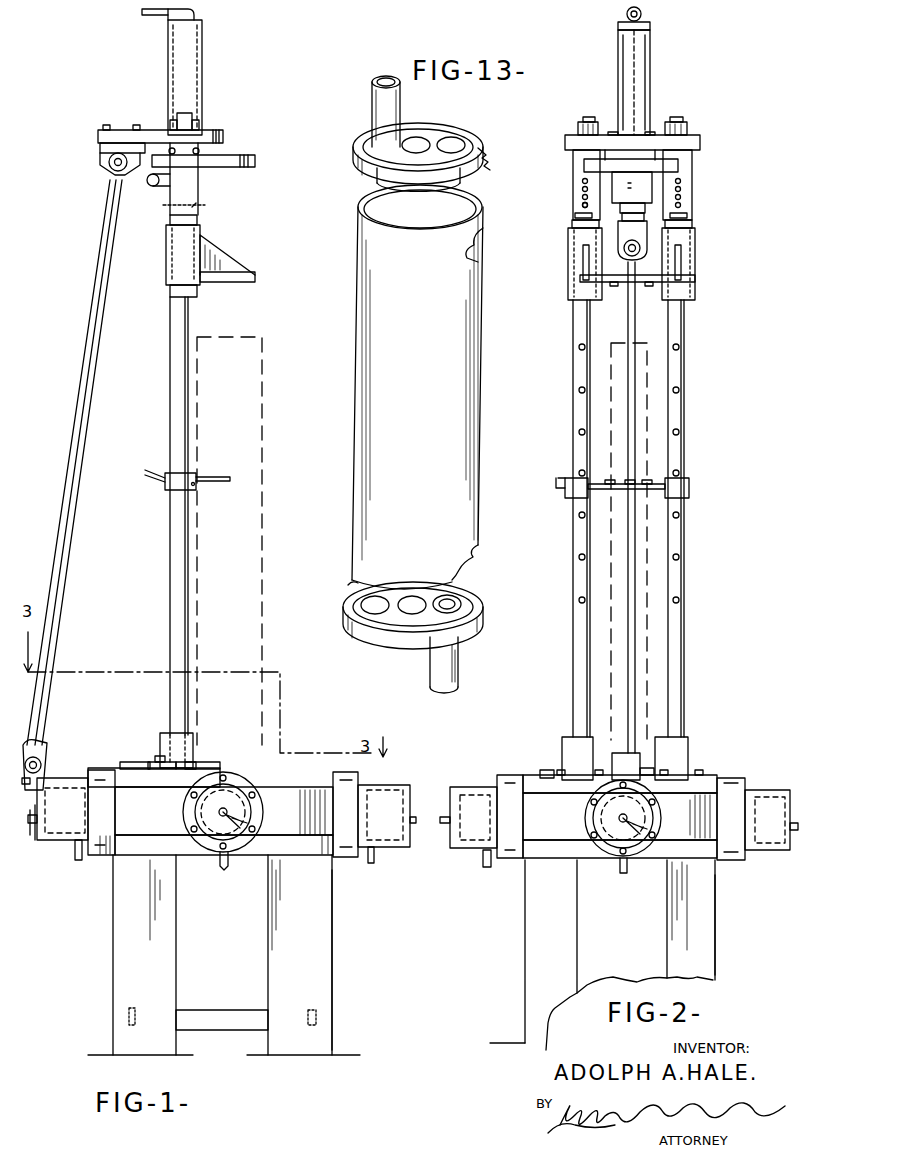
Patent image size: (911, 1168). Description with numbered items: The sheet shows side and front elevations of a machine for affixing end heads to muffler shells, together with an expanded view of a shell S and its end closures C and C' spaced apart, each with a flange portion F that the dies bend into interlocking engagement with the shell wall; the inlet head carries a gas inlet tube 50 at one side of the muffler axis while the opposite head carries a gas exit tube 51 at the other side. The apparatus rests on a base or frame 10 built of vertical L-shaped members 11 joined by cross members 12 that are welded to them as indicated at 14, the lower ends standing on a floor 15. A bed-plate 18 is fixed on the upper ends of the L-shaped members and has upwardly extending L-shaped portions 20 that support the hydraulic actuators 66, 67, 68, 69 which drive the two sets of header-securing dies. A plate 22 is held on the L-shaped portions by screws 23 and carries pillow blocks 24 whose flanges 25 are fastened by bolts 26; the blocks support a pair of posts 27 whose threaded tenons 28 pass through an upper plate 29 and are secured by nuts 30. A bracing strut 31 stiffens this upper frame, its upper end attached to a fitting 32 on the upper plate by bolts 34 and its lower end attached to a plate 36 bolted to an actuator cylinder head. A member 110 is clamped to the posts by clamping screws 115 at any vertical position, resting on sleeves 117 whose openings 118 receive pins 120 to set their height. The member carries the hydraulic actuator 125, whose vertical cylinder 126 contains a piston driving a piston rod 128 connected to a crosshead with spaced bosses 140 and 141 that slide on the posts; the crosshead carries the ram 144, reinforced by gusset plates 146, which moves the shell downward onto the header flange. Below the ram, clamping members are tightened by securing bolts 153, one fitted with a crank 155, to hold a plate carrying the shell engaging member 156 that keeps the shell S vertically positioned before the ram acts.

In FIG. 1, the base or frame 10 is at (340, 928).
In FIG. 2, the base or frame 10 is at (724, 928).
In FIG. 1, the L-shaped members 11 is at (118, 898).
In FIG. 2, the L-shaped members 11 is at (530, 910).
In FIG. 1, the cross members 12 is at (122, 1018).
In FIG. 1, the welds 14 is at (262, 1008).
In FIG. 1, the floor 15 is at (343, 1055).
In FIG. 1, the bed-plate 18 is at (252, 852).
In FIG. 2, the bed-plate 18 is at (651, 858).
In FIG. 1, the L-shaped portions 20 is at (158, 826).
In FIG. 2, the L-shaped portions 20 is at (557, 829).
In FIG. 1, the plate or member 22 is at (136, 778).
In FIG. 2, the plate or member 22 is at (688, 790).
In FIG. 1, the screws 23 is at (160, 762).
In FIG. 2, the screws 23 is at (543, 770).
In FIG. 1, the pillow blocks 24 is at (160, 735).
In FIG. 2, the pillow blocks 24 is at (565, 737).
In FIG. 1, the flanges 25 is at (188, 776).
In FIG. 2, the flanges 25 is at (672, 786).
In FIG. 1, the bolts 26 is at (195, 762).
In FIG. 2, the bolts 26 is at (650, 778).
In FIG. 1, the posts or rods 27 is at (188, 320).
In FIG. 2, the posts or rods 27 is at (578, 410).
In FIG. 1, the threaded tenons 28 is at (185, 120).
In FIG. 2, the threaded tenons 28 is at (583, 122).
In FIG. 1, the plate or member 29 is at (220, 133).
In FIG. 2, the plate or member 29 is at (700, 142).
In FIG. 1, the nuts 30 is at (172, 123).
In FIG. 2, the nuts 30 is at (580, 128).
In FIG. 1, the bracing bar or strut 31 is at (70, 333).
In FIG. 2, the bracing bar or strut 31 is at (632, 320).
In FIG. 1, the fitting 32 is at (106, 160).
In FIG. 1, the bolts 34 is at (130, 128).
In FIG. 1, the plate 36 is at (44, 783).
In FIG. 13, the gas inlet tube 50 is at (458, 657).
In FIG. 13, the gas exit tube 51 is at (395, 107).
In FIG. 1, the hydraulic actuator 66 is at (47, 840).
In FIG. 1, the hydraulic actuator 67 is at (405, 782).
In FIG. 2, the hydraulic actuator 67 is at (608, 850).
In FIG. 1, the hydraulic actuator 68 is at (236, 795).
In FIG. 2, the hydraulic actuator 68 is at (465, 848).
In FIG. 2, the hydraulic actuator 69 is at (748, 803).
In FIG. 1, the member or plate 110 is at (240, 157).
In FIG. 2, the member or plate 110 is at (680, 162).
In FIG. 1, the clamping screws 115 is at (198, 153).
In FIG. 1, the sleeves 117 is at (192, 194).
In FIG. 2, the sleeves 117 is at (573, 190).
In FIG. 2, the openings 118 is at (580, 206).
In FIG. 1, the pins or positioning members 120 is at (198, 208).
In FIG. 2, the pins or positioning members 120 is at (687, 215).
In FIG. 1, the hydraulic actuator 125 is at (203, 58).
In FIG. 2, the hydraulic actuator 125 is at (650, 70).
In FIG. 1, the cylinder 126 is at (178, 35).
In FIG. 2, the cylinder 126 is at (645, 46).
In FIG. 2, the piston rod 128 is at (640, 210).
In FIG. 2, the boss 140 is at (695, 240).
In FIG. 1, the boss 141 is at (166, 258).
In FIG. 2, the boss 141 is at (568, 248).
In FIG. 1, the pressure pad or ram member 144 is at (238, 275).
In FIG. 2, the pressure pad or ram member 144 is at (695, 279).
In FIG. 1, the gusset plates 146 is at (210, 258).
In FIG. 2, the gusset plates 146 is at (681, 255).
In FIG. 2, the securing bolts 153 is at (689, 488).
In FIG. 1, the crank 155 is at (156, 482).
In FIG. 2, the crank 155 is at (562, 470).
In FIG. 1, the shell engaging member 156 is at (203, 477).
In FIG. 1, the shell S is at (267, 425).
In FIG. 2, the shell S is at (656, 415).
In FIG. 13, the shell S is at (484, 302).
In FIG. 13, the end closure or header C is at (420, 615).
In FIG. 13, the end head C' is at (425, 136).
In FIG. 13, the flange portion F is at (487, 158).